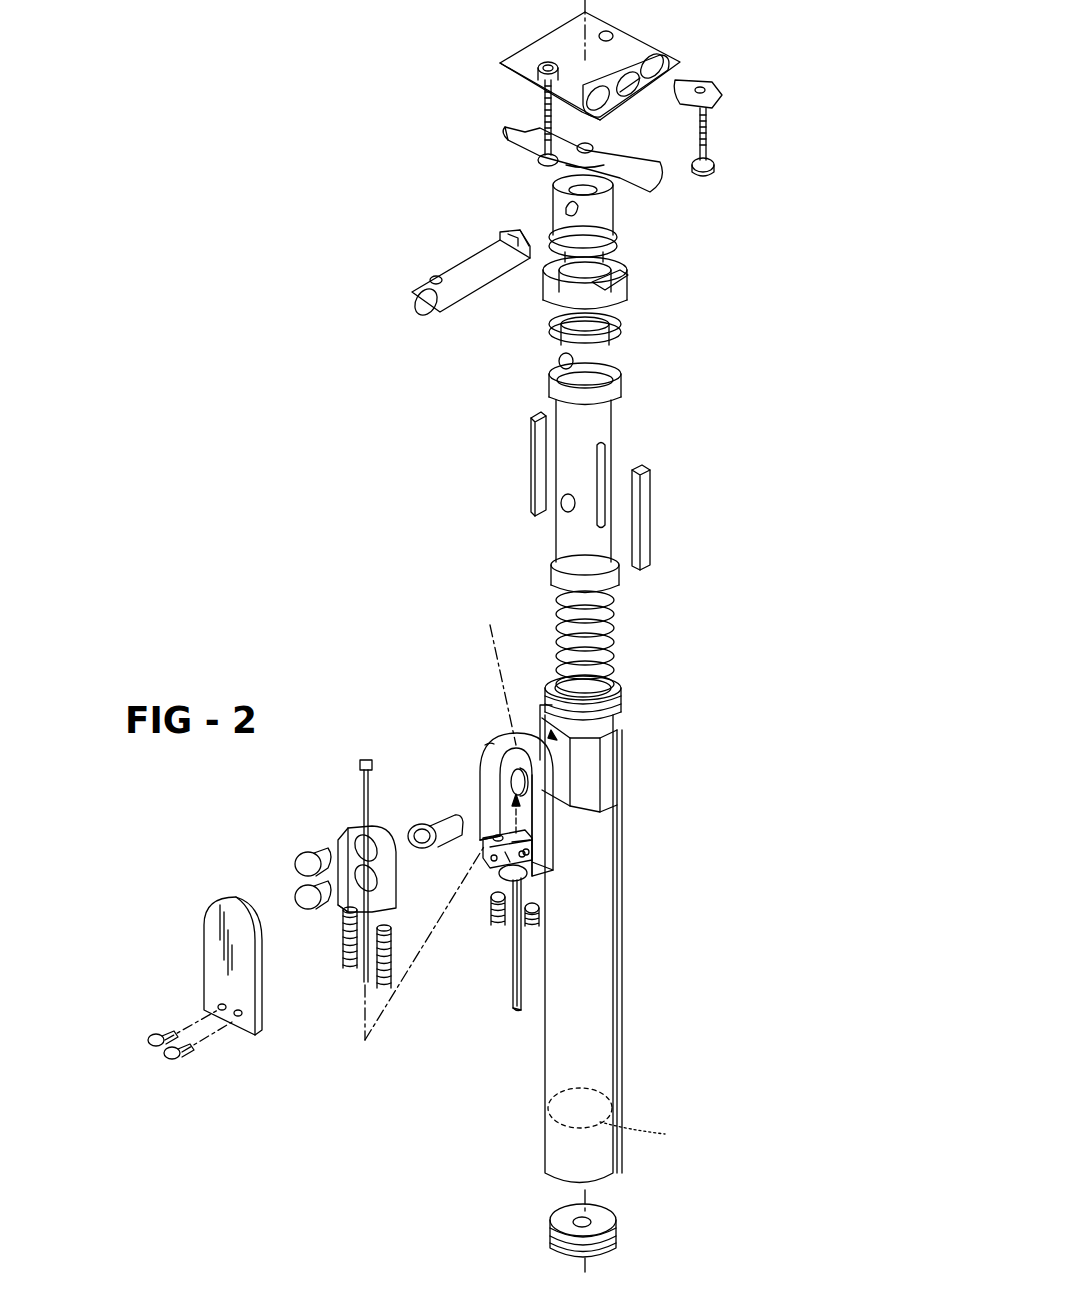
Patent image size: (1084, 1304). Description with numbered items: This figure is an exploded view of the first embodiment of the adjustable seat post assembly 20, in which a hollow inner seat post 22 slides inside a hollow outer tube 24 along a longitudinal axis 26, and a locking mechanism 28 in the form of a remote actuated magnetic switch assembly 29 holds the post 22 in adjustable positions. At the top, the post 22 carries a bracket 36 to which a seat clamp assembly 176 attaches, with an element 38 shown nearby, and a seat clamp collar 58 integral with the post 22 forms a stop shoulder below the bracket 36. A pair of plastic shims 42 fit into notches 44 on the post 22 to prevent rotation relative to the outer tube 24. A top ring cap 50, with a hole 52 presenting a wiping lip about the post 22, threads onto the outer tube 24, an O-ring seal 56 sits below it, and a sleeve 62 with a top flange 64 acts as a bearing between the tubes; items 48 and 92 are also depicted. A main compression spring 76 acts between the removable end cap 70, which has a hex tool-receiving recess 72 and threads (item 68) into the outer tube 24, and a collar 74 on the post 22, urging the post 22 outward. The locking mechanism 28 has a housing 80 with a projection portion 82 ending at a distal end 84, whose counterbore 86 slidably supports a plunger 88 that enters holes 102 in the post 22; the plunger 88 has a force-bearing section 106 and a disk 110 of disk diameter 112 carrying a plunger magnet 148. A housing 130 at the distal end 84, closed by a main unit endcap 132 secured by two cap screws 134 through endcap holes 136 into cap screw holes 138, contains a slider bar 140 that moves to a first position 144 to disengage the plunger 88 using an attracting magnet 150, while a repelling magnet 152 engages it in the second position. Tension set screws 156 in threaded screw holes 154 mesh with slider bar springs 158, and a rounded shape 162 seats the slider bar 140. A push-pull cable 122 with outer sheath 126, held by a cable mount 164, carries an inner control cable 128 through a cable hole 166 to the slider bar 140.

The seat post assembly 20 is at (761, 348).
The inner seat post 22 is at (605, 416).
The outer tube 24 is at (612, 828).
The longitudinal axis 26 is at (570, 8).
The locking mechanism 28 is at (349, 668).
The remote actuated magnetic switch assembly 29 is at (553, 735).
The bracket 36 is at (618, 220).
The bracket flange 38 is at (560, 168).
The shims 42 is at (532, 438).
The notches 44 is at (605, 448).
The collar 48 is at (622, 684).
The top ring cap 50 is at (628, 292).
The hole 52 is at (622, 282).
The O-ring seal 56 is at (622, 340).
The seat clamp collar 58 is at (550, 240).
The sleeve 62 is at (622, 384).
The top flange 64 is at (552, 374).
The threaded cap 68 is at (612, 1238).
The end cap 70 is at (600, 1228).
The tool-receiving recess 72 is at (598, 1212).
The collar 74 is at (620, 578).
The main compression spring 76 is at (556, 610).
The housing 80 is at (588, 788).
The projection portion 82 is at (512, 740).
The distal end 84 is at (480, 775).
The counterbore 86 is at (555, 758).
The plunger 88 is at (440, 822).
The hidden tube end 92 is at (620, 1124).
The holes 102 is at (560, 358).
The force-bearing section 106 is at (448, 818).
The disk 110 is at (430, 850).
The disk diameter 112 is at (410, 822).
The push-pull cable 122 is at (501, 1007).
The outer sheath 126 is at (516, 1012).
The inner control cable 128 is at (362, 798).
The housing 130 is at (540, 860).
The main unit endcap 132 is at (208, 948).
The cap screws 134 is at (168, 1058).
The endcap holes 136 is at (218, 1004).
The cap screw holes 138 is at (500, 885).
The slider bar 140 is at (345, 848).
The first position 144 is at (490, 626).
The plunger magnet 148 is at (392, 828).
The attracting magnet 150 is at (300, 860).
The repelling magnet 152 is at (300, 890).
The threaded screw holes 154 is at (540, 856).
The tension set screws 156 is at (498, 928).
The slider bar springs 158 is at (378, 992).
The rounded shape 162 is at (488, 745).
The cable mount 164 is at (530, 872).
The cable hole 166 is at (538, 843).
The seat clamp assembly 176 is at (663, 60).